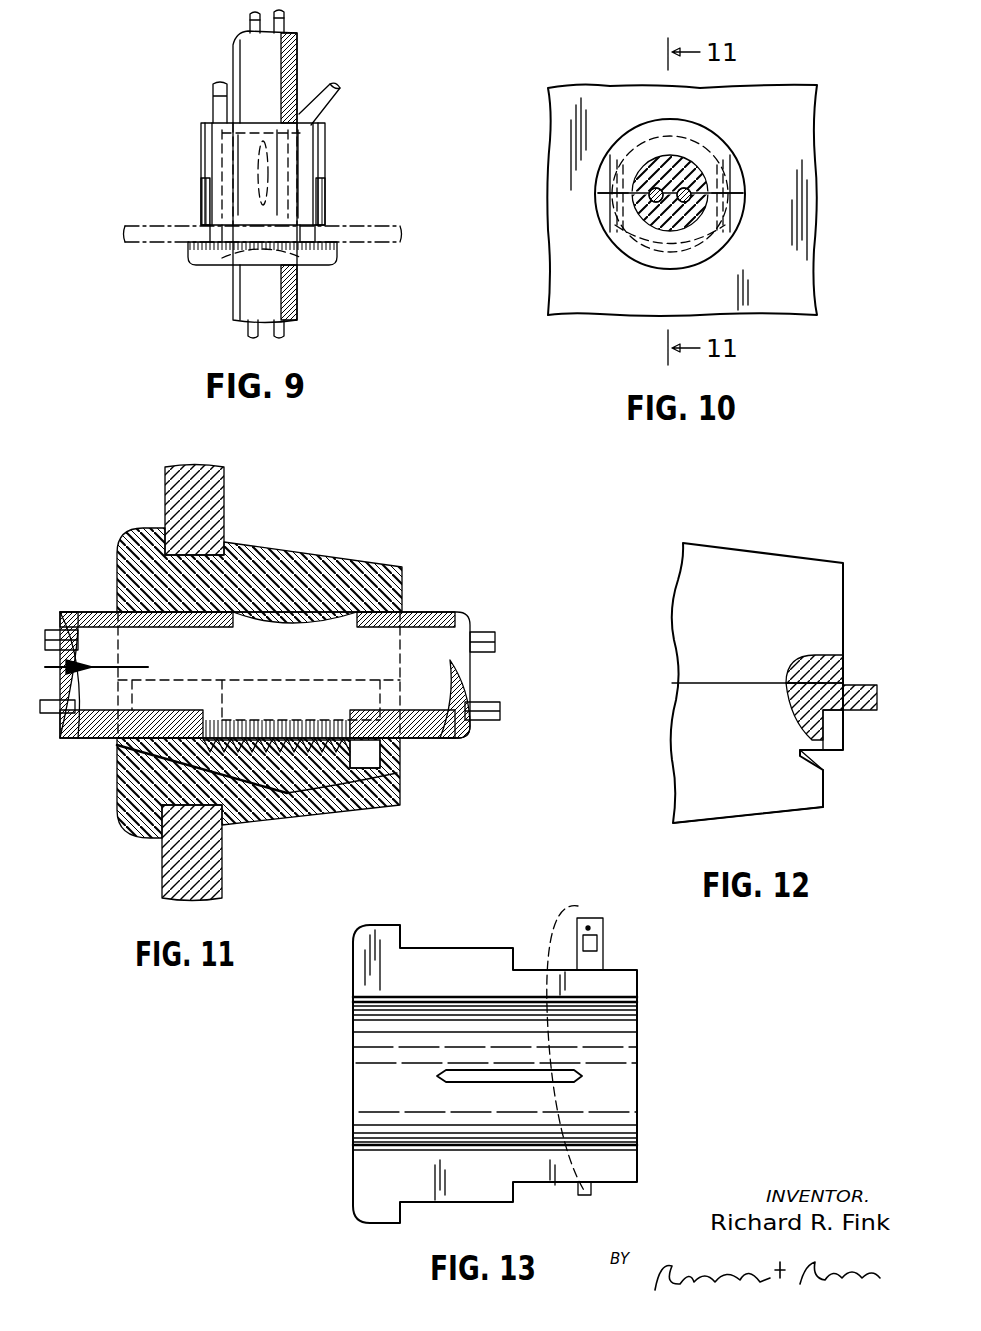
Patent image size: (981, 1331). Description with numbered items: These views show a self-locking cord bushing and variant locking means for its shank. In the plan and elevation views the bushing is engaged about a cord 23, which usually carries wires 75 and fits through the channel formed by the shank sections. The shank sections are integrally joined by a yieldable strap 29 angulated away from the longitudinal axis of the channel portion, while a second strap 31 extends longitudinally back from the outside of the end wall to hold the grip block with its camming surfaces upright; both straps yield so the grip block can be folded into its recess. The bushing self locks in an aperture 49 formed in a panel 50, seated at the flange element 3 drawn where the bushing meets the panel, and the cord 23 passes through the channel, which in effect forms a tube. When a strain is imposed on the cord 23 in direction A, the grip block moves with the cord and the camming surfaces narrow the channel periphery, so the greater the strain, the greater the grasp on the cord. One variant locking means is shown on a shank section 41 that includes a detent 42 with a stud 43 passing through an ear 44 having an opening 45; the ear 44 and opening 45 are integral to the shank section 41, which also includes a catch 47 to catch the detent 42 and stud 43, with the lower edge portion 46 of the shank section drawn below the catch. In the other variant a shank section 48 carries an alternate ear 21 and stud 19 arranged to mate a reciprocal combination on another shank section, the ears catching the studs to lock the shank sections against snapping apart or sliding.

In FIG. 9, the cord 23 is at (299, 64).
In FIG. 10, the cord 23 is at (700, 186).
In FIG. 11, the cord 23 is at (452, 680).
In FIG. 9, the wires 75 is at (250, 17).
In FIG. 10, the wires 75 is at (640, 242).
In FIG. 11, the wires 75 is at (480, 632).
In FIG. 9, the strap 31 is at (213, 88).
In FIG. 9, the strap 29 is at (340, 92).
In FIG. 9, the housing flange 3 is at (330, 262).
In FIG. 10, the aperture 49 is at (716, 142).
In FIG. 11, the aperture 49 is at (205, 560).
In FIG. 10, the panel 50 is at (792, 132).
In FIG. 11, the panel 50 is at (222, 817).
In FIG. 11, the direction A is at (140, 667).
In FIG. 12, the shank section 41 is at (806, 571).
In FIG. 12, the opening 45 is at (846, 670).
In FIG. 12, the ear 44 is at (870, 690).
In FIG. 12, the detent 42 is at (845, 733).
In FIG. 12, the catch 47 is at (830, 762).
In FIG. 12, the stud 43 is at (826, 796).
In FIG. 12, the edge 46 is at (765, 805).
In FIG. 13, the ear 21 is at (600, 930).
In FIG. 13, the shank section 48 is at (628, 990).
In FIG. 13, the stud 19 is at (580, 1196).